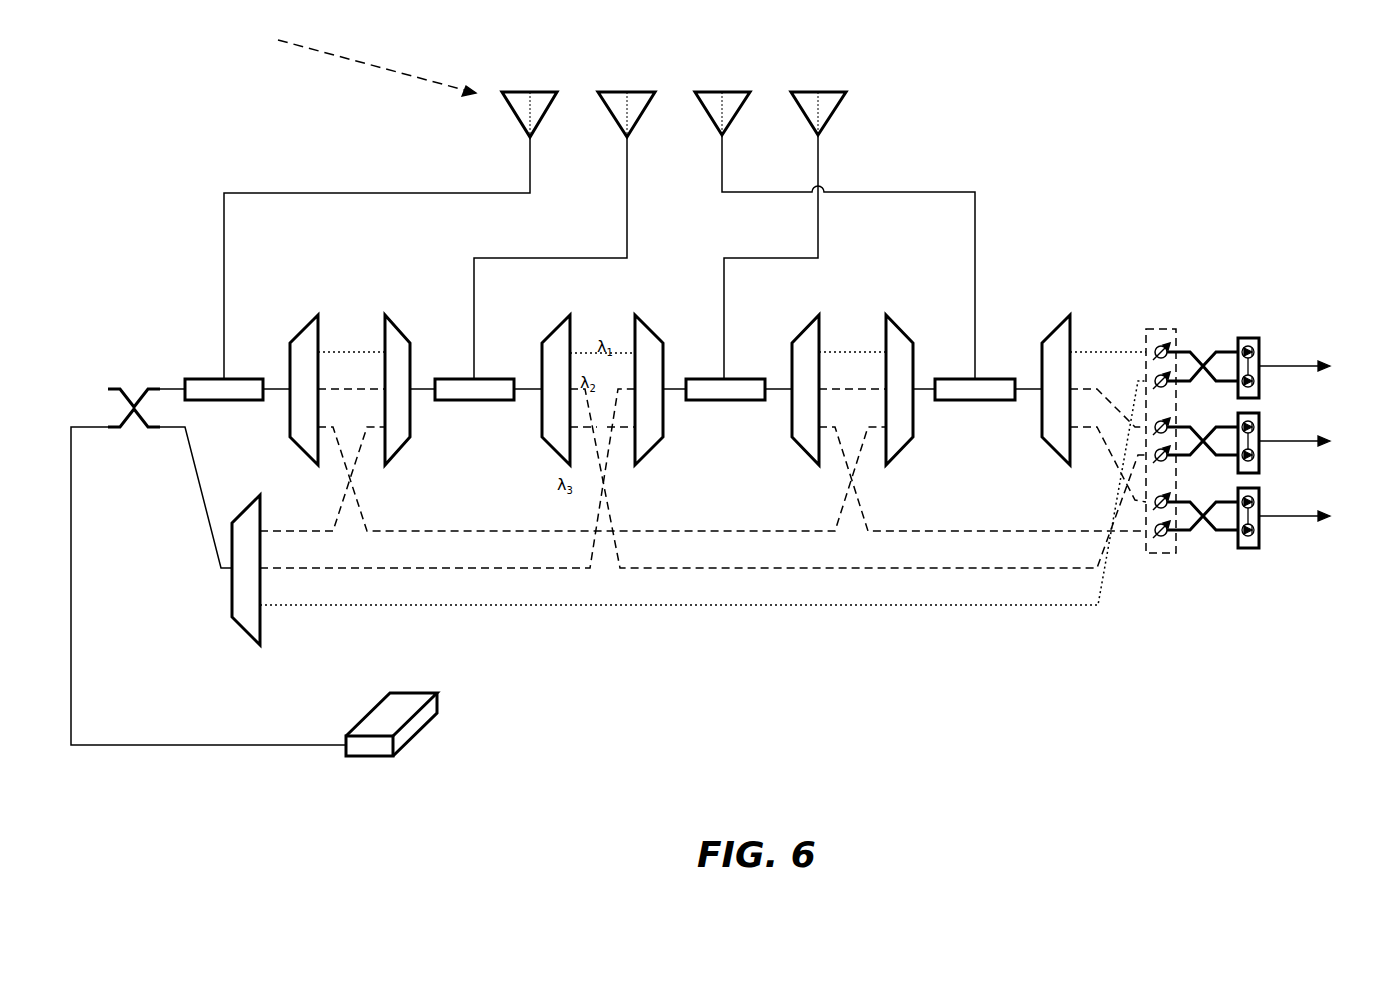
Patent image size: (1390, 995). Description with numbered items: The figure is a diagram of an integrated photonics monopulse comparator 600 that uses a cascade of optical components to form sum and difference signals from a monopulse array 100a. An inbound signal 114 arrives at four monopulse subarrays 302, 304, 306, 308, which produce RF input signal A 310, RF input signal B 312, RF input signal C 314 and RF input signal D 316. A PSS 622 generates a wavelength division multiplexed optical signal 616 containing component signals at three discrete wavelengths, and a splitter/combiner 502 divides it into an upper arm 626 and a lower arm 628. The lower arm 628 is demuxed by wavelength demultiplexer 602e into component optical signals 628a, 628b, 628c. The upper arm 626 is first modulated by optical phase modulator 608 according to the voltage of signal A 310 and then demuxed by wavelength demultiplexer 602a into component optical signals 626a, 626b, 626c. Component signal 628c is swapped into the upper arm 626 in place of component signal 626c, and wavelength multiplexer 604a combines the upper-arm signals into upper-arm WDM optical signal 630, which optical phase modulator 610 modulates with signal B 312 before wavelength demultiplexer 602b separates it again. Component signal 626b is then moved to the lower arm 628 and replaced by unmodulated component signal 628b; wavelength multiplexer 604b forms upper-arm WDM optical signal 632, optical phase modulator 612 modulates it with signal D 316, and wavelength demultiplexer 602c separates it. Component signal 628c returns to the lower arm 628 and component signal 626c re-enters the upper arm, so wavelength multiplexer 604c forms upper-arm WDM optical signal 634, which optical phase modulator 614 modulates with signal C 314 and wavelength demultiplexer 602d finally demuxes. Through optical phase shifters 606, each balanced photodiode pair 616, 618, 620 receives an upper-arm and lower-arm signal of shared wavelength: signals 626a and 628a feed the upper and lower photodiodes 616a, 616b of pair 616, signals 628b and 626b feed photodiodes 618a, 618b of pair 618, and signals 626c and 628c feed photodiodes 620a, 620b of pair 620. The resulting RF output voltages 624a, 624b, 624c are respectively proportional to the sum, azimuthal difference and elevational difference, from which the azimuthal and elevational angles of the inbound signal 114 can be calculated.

The integrated photonics monopulse comparator 600 is at (159, 96).
The inbound signal 114 is at (343, 60).
The monopulse array 100a is at (846, 52).
The monopulse subarray 302 is at (518, 92).
The monopulse subarray 304 is at (614, 92).
The monopulse subarray 306 is at (710, 92).
The monopulse subarray 308 is at (806, 92).
The RF input signal A 310 is at (510, 193).
The RF input signal B 312 is at (626, 202).
The RF input signal C 314 is at (898, 192).
The RF input signal D 316 is at (815, 243).
The splitter/combiner 502 is at (118, 389).
The upper arm 626 is at (170, 388).
The lower arm 628 is at (175, 430).
The optical phase modulator 608 is at (212, 378).
The optical phase modulator 610 is at (490, 378).
The optical phase modulator 612 is at (712, 378).
The optical phase modulator 614 is at (995, 378).
The wavelength demultiplexer 602a is at (305, 328).
The wavelength demultiplexer 602b is at (557, 328).
The wavelength demultiplexer 602c is at (805, 328).
The wavelength demultiplexer 602d is at (1055, 325).
The wavelength demultiplexer 602e is at (232, 575).
The wavelength multiplexer 604a is at (393, 328).
The wavelength multiplexer 604b is at (633, 325).
The wavelength multiplexer 604c is at (880, 325).
The component optical signal 626a is at (732, 343).
The component optical signal 626b is at (732, 466).
The component optical signal 626c is at (732, 479).
The component optical signal 628a is at (703, 493).
The component optical signal 628b is at (573, 466).
The component optical signal 628c is at (703, 479).
The upper-arm WDM optical signal 630 is at (425, 392).
The upper-arm WDM optical signal 632 is at (675, 392).
The upper-arm WDM optical signal 634 is at (925, 392).
The optical phase shifters 606 is at (1162, 329).
The balanced photodiode pair 616 is at (689, 514).
The upper photodiode 616a is at (1257, 350).
The lower photodiode 616b is at (1258, 386).
The balanced photodiode pair 618 is at (1255, 450).
The upper photodiode 618a is at (1258, 426).
The lower photodiode 618b is at (1260, 458).
The balanced photodiode pair 620 is at (1252, 541).
The upper photodiode 620a is at (1259, 500).
The lower photodiode 620b is at (1228, 583).
The PSS 622 is at (410, 730).
The RF output voltage 624a is at (1297, 365).
The RF output voltage 624b is at (1302, 440).
The RF output voltage 624c is at (1300, 518).